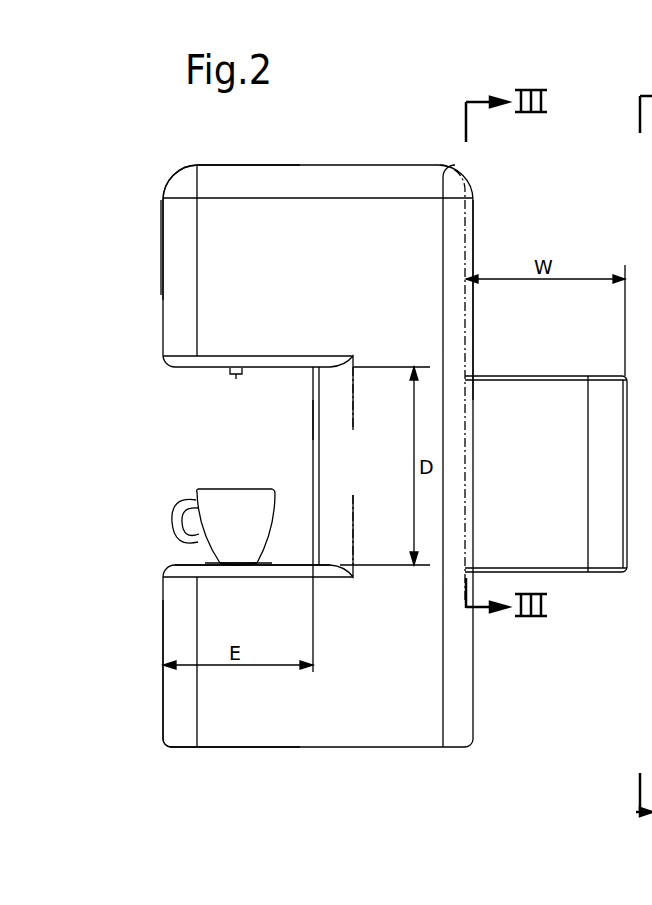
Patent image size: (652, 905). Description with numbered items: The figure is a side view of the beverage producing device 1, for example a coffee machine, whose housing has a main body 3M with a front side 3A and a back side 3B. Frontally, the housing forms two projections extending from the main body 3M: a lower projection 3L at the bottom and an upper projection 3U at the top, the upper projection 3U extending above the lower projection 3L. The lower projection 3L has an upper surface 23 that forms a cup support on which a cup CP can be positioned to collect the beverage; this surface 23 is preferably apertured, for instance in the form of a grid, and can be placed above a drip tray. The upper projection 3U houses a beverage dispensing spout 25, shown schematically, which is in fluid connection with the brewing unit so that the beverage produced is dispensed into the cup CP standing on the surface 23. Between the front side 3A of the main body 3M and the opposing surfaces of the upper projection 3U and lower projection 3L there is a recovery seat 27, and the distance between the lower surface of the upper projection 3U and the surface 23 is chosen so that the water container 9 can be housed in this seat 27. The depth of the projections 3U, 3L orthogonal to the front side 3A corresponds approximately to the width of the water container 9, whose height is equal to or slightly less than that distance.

The beverage producing device 1 is at (340, 150).
The upper projection 3U is at (175, 222).
The back side 3B is at (476, 242).
The lower projection 3L is at (175, 641).
The main body 3M is at (393, 428).
The front side 3A is at (312, 407).
The water container 9 is at (545, 374).
The beverage dispensing spout 25 is at (236, 378).
The recovery seat 27 is at (259, 452).
The upper surface 23 is at (278, 554).
The cup CP is at (235, 503).